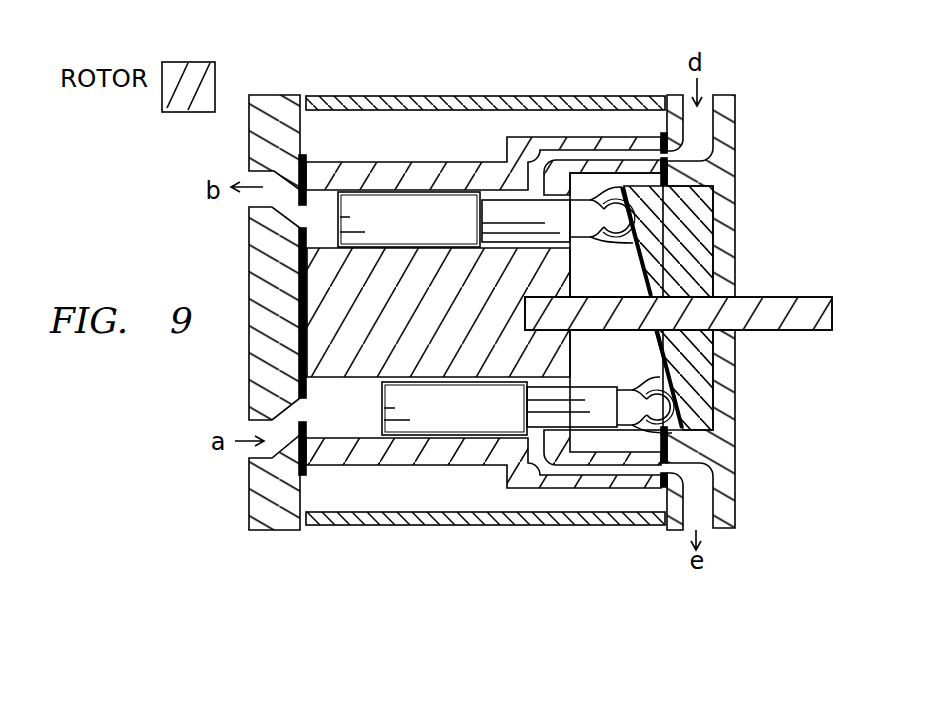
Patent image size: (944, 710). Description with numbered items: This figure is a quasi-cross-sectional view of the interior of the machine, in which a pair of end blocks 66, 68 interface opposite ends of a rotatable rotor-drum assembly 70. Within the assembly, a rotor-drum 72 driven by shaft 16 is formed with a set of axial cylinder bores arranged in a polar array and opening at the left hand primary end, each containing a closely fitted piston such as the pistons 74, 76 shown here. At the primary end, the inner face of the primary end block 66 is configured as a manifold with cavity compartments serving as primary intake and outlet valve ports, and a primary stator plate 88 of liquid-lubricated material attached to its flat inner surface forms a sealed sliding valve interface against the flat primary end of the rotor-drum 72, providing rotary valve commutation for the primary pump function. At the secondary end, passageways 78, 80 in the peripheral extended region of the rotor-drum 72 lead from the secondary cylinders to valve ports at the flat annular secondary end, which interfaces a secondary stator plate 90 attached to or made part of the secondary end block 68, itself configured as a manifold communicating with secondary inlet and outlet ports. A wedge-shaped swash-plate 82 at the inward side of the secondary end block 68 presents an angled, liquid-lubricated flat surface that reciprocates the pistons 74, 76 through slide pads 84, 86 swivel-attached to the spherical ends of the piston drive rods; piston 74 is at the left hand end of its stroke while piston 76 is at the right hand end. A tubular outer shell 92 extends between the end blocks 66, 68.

The shaft 16 is at (797, 298).
The primary end block 66 is at (312, 553).
The secondary end block 68 is at (737, 578).
The rotor-drum assembly 70 is at (313, 79).
The rotor-drum 72 is at (440, 323).
The piston 74 is at (398, 226).
The piston 76 is at (438, 417).
The passageway 78 is at (562, 153).
The passageway 80 is at (570, 465).
The swash-plate 82 is at (665, 258).
The slide pad 84 is at (628, 242).
The slide pad 86 is at (660, 380).
The primary stator plate 88 is at (298, 358).
The secondary stator plate 90 is at (690, 472).
The tubular outer shell 92 is at (500, 527).